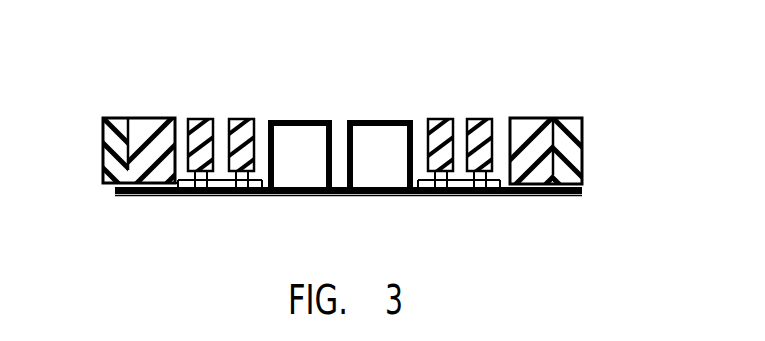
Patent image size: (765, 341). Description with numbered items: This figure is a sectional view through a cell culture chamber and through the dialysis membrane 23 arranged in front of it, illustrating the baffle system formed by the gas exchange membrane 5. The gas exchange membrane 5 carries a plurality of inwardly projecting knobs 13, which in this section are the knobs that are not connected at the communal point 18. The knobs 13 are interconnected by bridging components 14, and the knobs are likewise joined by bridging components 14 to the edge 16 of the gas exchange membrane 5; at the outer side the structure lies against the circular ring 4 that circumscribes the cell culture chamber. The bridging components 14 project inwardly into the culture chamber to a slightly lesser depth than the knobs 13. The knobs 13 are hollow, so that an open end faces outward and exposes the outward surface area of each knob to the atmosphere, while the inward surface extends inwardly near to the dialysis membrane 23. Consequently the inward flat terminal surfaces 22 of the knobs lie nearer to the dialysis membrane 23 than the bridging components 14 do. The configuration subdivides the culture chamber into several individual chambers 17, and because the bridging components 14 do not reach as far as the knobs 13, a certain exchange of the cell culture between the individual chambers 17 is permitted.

The circular ring 4 is at (103, 140).
The gas exchange membrane 5 is at (474, 96).
The knobs 13 is at (222, 194).
The bridging components 14 is at (200, 119).
The edge of the gas exchange membrane 16 is at (112, 140).
The individual chambers 17 is at (312, 165).
The communal point 18 is at (335, 194).
The inward flat terminal surfaces 22 is at (183, 194).
The dialysis membrane 23 is at (495, 194).